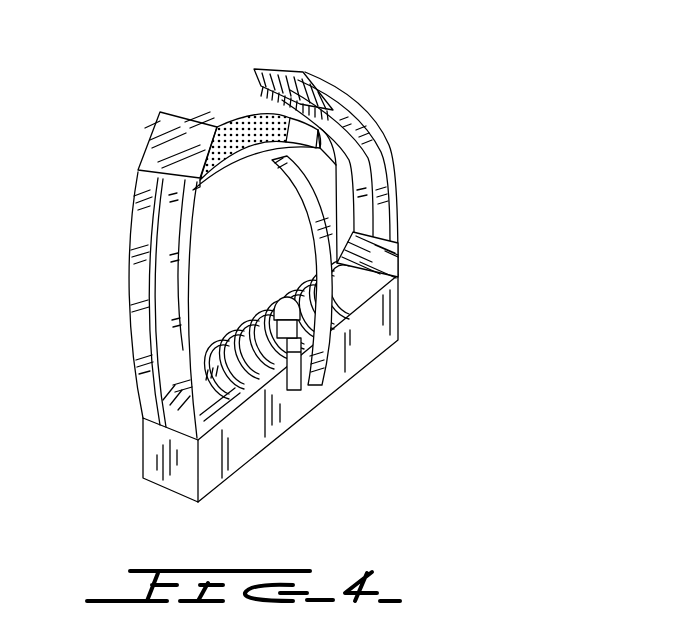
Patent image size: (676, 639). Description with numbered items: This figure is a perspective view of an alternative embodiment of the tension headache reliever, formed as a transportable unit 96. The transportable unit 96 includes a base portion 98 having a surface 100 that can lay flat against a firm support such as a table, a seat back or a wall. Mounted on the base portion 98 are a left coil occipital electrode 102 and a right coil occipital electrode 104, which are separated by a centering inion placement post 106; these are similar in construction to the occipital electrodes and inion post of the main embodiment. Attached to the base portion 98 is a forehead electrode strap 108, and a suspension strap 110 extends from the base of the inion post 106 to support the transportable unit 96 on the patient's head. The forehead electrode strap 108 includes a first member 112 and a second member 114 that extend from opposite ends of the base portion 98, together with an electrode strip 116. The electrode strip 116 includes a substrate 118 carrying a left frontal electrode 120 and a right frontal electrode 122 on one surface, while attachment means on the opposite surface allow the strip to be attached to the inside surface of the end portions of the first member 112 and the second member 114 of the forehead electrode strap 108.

The transportable unit 96 is at (465, 253).
The base portion 98 is at (370, 363).
The surface 100 is at (242, 472).
The left coil occipital electrode 102 is at (232, 345).
The right coil occipital electrode 104 is at (368, 278).
The centering inion placement post 106 is at (281, 292).
The forehead electrode strap 108 is at (407, 180).
The suspension strap 110 is at (333, 226).
The first member 112 is at (128, 320).
The second member 114 is at (322, 103).
The electrode strip 116 is at (213, 97).
The substrate 118 is at (259, 144).
The left frontal electrode 120 is at (228, 183).
The right frontal electrode 122 is at (333, 153).